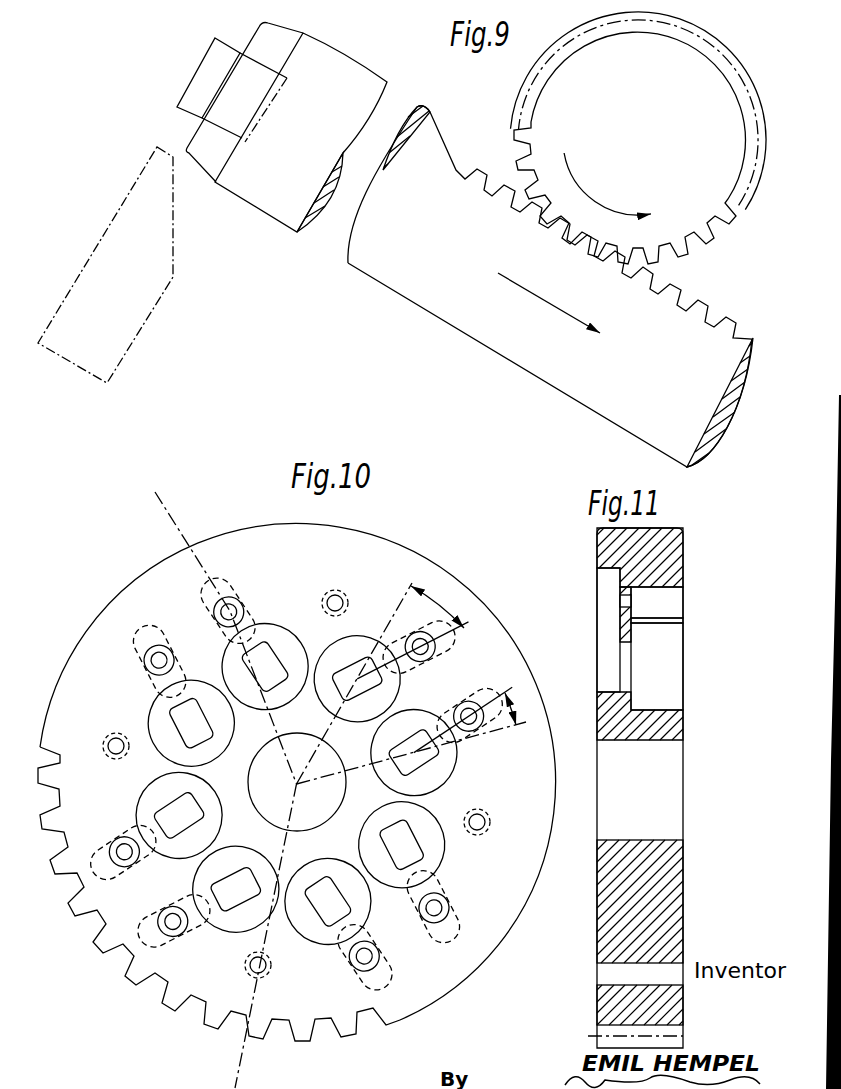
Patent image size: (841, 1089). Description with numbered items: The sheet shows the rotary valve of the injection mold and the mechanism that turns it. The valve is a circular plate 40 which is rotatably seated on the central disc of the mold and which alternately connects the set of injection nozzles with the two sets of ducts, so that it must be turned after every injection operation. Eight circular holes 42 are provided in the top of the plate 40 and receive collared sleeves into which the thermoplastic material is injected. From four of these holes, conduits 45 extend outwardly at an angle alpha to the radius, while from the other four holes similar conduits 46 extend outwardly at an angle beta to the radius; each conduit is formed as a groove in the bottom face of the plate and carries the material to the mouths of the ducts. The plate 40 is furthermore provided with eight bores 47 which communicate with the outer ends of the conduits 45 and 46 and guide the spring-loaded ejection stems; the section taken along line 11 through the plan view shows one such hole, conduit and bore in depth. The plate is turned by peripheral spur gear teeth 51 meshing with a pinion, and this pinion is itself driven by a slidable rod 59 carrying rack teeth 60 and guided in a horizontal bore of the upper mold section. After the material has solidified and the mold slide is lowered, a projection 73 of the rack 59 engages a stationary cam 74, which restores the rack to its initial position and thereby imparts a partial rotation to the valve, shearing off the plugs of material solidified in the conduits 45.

In FIG. 9, the projection 73 is at (198, 80).
In FIG. 9, the stationary cam 74 is at (152, 273).
In FIG. 9, the rack teeth 60 is at (477, 176).
In FIG. 9, the slidable rod 59 is at (650, 333).
In FIG. 10, the circular plate 40 is at (542, 870).
In FIG. 11, the circular plate 40 is at (678, 900).
In FIG. 10, the peripheral spur gear teeth 51 is at (275, 1028).
In FIG. 10, the circular holes 42 is at (454, 772).
In FIG. 11, the circular holes 42 is at (673, 652).
In FIG. 10, the conduits 45 is at (158, 680).
In FIG. 11, the conduits 45 is at (603, 615).
In FIG. 10, the conduits 46 is at (250, 626).
In FIG. 11, the bores 47 is at (675, 602).
In FIG. 10, the section line 11 is at (157, 503).